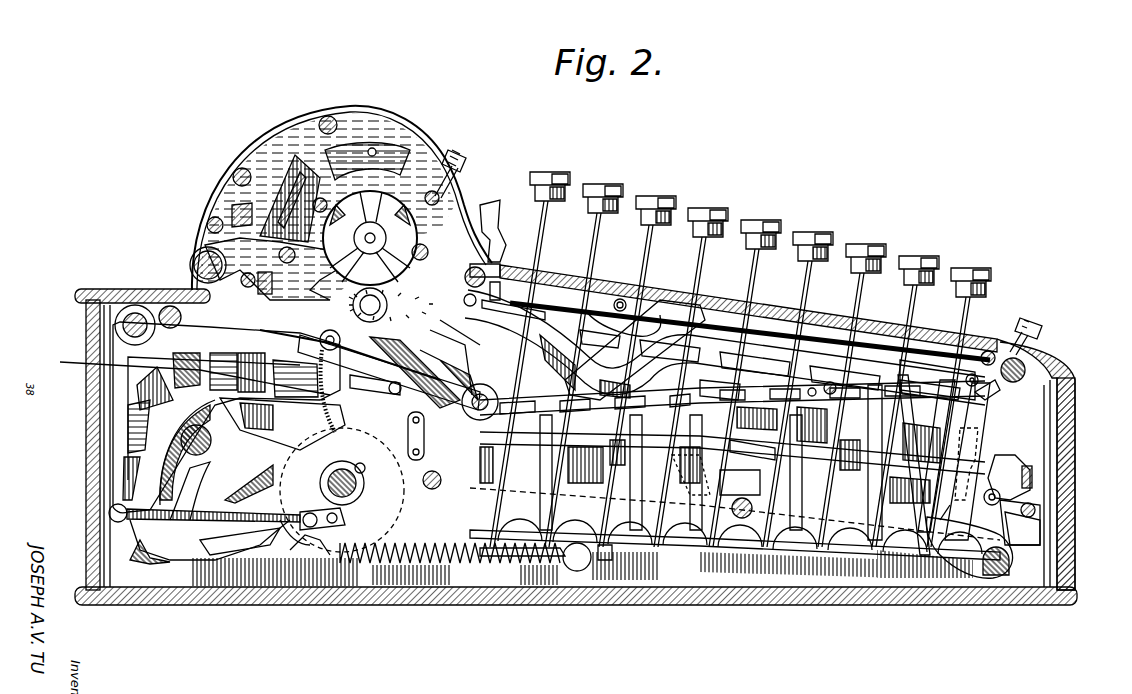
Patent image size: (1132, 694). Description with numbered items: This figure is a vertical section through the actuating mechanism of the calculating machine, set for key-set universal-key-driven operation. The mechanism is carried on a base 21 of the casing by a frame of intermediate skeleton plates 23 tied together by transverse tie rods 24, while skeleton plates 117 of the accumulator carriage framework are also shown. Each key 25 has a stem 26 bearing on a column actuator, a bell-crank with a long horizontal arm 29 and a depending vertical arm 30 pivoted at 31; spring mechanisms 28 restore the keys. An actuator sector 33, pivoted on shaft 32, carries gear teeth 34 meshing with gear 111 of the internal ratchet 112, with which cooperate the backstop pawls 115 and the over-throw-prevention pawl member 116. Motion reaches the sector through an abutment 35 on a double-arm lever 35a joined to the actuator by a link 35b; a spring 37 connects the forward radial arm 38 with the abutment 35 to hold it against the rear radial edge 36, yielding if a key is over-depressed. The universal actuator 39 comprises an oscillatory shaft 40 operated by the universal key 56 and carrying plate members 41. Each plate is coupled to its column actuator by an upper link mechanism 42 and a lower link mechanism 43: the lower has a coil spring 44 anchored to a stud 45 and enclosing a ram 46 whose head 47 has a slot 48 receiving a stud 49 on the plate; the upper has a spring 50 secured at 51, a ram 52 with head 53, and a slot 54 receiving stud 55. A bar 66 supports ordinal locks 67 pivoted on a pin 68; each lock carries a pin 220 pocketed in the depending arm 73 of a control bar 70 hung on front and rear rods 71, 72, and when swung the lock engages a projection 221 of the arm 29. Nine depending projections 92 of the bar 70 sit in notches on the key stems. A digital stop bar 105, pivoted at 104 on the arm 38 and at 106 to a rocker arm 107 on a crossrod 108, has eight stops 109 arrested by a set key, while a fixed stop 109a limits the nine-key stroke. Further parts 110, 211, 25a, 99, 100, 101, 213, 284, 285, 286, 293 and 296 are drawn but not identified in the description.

The skeleton plates 117 is at (272, 150).
The internal ratchet 112 is at (420, 208).
The gear 111 is at (380, 290).
The main wheel 110 is at (403, 233).
The pawls 115 is at (428, 250).
The gear teeth 34 is at (500, 240).
The forward radial arm 38 is at (498, 263).
The spring 37 is at (466, 278).
The pivot 104 is at (476, 298).
The pivot 31 is at (134, 310).
The actuator sector 33 is at (182, 318).
The attachment point 51 is at (300, 335).
The over-throw-prevention pawl member 116 is at (322, 346).
The fixed stop 109a is at (181, 372).
The vertical arm 30 is at (120, 420).
The upper link mechanism 42 is at (290, 418).
The spring 50 is at (330, 420).
The ram 52 is at (310, 432).
The ram 46 is at (190, 520).
The oscillatory shaft 40 is at (320, 488).
The stud 45 is at (110, 513).
The coil spring 44 is at (215, 535).
The lower link mechanism 43 is at (226, 545).
The link 211 is at (284, 540).
The head 47 is at (305, 528).
The slot 48 is at (328, 530).
The stud 49 is at (336, 525).
The universal actuator 39 is at (360, 550).
The universal actuator plate members 41 is at (400, 560).
The head 53 is at (362, 474).
The slot 54 is at (426, 452).
The stud 55 is at (424, 482).
The rear radial edge 36 is at (384, 385).
The abutment 35 is at (420, 375).
The double-arm lever 35a is at (450, 365).
The link 35b is at (465, 372).
The shaft 32 is at (498, 404).
The key 25 is at (770, 228).
The stem 26 is at (748, 268).
The key lever 25a is at (640, 320).
The rear rod 72 is at (621, 298).
The digital stop bar 105 is at (672, 320).
The depending projections 92 is at (868, 384).
The stops 109 is at (815, 338).
The ordinal lock control bar 70 is at (915, 345).
The pivot 106 is at (975, 355).
The front rod 71 is at (975, 372).
The knob 101 is at (1036, 318).
The shaft 100 is at (1028, 372).
The arm 99 is at (992, 390).
The rocker arm 107 is at (1000, 412).
The link 293 is at (985, 430).
The block 286 is at (1010, 470).
The pin 284 is at (1030, 478).
The pivot 285 is at (1000, 500).
The crossrod 108 is at (1035, 548).
The transverse tie rods 24 is at (992, 580).
The intermediate skeleton plates 23 is at (968, 552).
The link 296 is at (925, 545).
The column actuator 29 is at (600, 410).
The depending arm 73 is at (715, 393).
The pin 220 is at (757, 418).
The projection 221 is at (752, 450).
The pin 68 is at (700, 480).
The ordinal actuator locks 67 is at (720, 476).
The bar 66 is at (675, 545).
The base 21 is at (778, 560).
The universal key 56 is at (577, 572).
The bar 213 is at (566, 556).
The spring mechanisms 28 is at (605, 560).